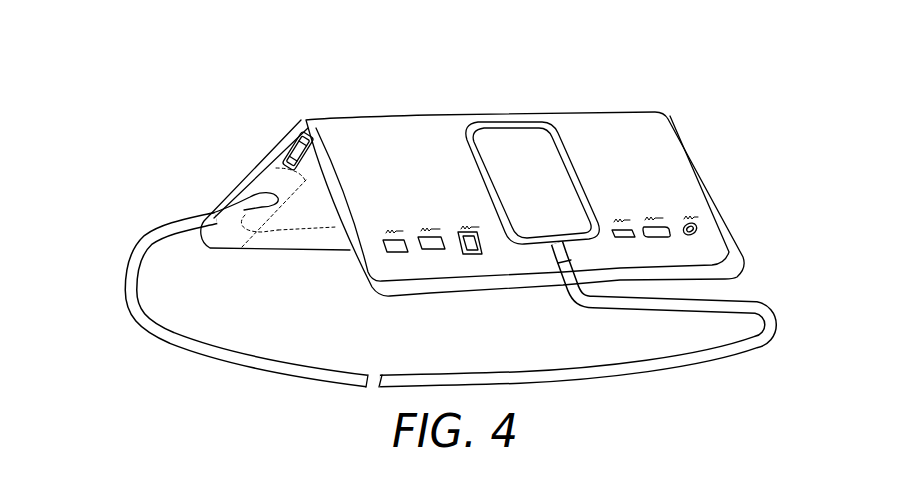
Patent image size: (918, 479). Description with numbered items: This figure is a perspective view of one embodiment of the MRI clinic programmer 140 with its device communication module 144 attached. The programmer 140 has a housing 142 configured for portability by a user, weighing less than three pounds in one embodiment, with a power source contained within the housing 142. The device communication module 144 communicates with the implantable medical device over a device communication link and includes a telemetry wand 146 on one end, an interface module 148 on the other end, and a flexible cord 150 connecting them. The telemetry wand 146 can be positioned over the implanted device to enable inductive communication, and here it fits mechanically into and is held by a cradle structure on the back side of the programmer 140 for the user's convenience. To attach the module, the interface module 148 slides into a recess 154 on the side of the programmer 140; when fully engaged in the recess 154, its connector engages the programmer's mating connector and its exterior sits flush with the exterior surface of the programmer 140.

The MRI clinic programmer 140 is at (570, 75).
The housing 142 is at (665, 112).
The device communication module 144 is at (210, 214).
The telemetry wand 146 is at (486, 124).
The interface module 148 is at (280, 220).
The flexible cord 150 is at (300, 388).
The recess 154 is at (278, 157).